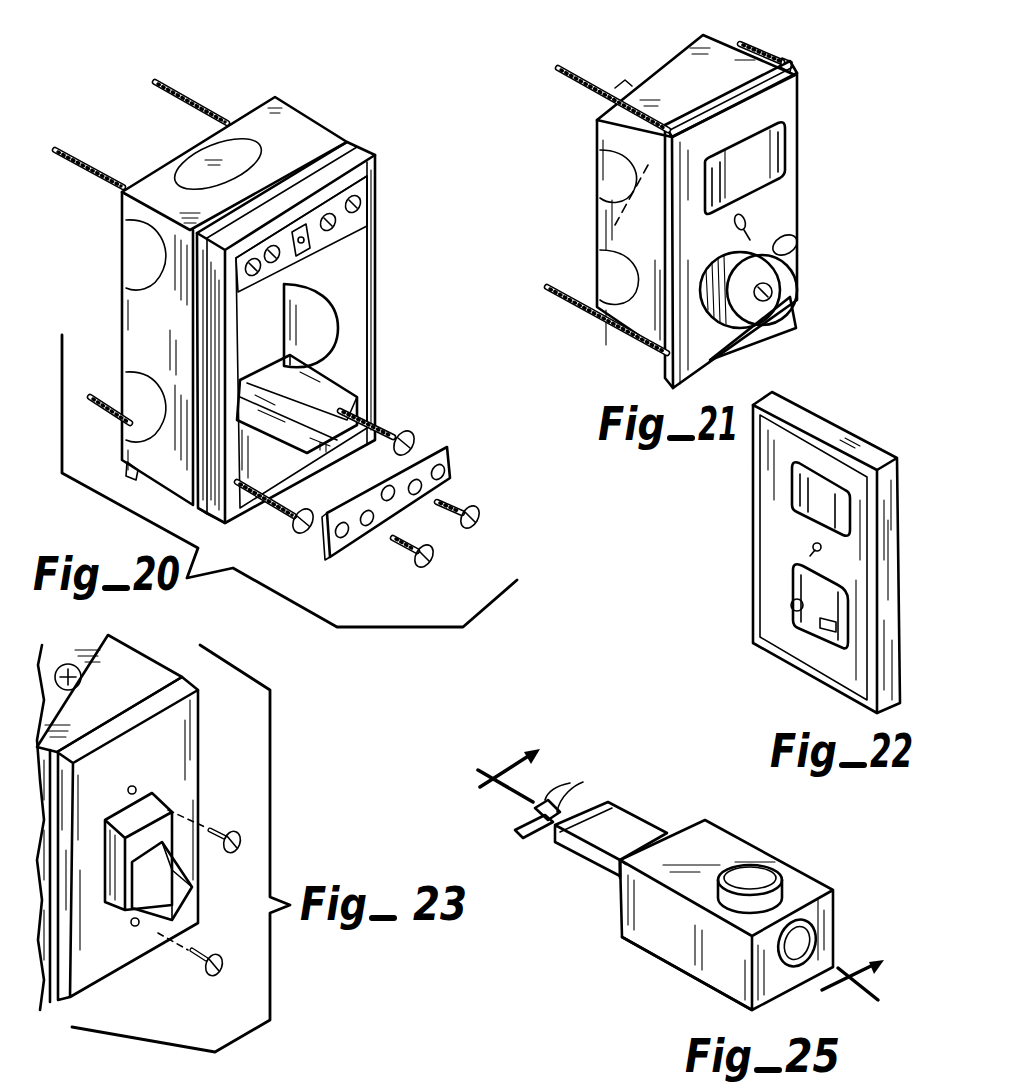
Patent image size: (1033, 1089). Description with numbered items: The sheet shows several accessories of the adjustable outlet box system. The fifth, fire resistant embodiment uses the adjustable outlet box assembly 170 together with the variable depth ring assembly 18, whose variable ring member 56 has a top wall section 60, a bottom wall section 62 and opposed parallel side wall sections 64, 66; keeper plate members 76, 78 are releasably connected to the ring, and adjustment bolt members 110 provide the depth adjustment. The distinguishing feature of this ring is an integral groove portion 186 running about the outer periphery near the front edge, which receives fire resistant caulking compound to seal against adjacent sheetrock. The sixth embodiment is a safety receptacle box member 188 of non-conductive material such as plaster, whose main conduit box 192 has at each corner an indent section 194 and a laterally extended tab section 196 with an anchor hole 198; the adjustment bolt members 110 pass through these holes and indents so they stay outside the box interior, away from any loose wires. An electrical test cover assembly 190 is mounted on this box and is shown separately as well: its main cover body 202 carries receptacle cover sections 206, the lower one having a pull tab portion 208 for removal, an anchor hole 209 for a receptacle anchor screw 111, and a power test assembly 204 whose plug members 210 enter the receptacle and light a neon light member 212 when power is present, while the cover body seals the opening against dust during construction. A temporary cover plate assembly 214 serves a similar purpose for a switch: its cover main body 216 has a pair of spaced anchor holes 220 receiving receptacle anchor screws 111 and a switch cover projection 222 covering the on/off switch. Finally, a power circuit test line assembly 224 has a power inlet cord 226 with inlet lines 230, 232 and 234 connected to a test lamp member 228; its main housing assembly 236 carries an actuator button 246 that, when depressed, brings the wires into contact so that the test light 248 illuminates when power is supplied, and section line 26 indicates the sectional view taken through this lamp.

In FIG. 20, the variable depth ring assembly 18 is at (380, 223).
In FIG. 20, the variable ring member 56 is at (122, 300).
In FIG. 23, the variable ring member 56 is at (72, 676).
In FIG. 20, the top wall section 60 is at (150, 183).
In FIG. 20, the bottom wall section 62 is at (130, 468).
In FIG. 20, the side wall section 64 is at (127, 395).
In FIG. 20, the side wall section 66 is at (377, 302).
In FIG. 20, the keeper plate member 76 is at (450, 458).
In FIG. 20, the keeper plate member 78 is at (366, 262).
In FIG. 20, the adjustment bolt member 110 is at (80, 158).
In FIG. 21, the adjustment bolt member 110 is at (558, 72).
In FIG. 23, the receptacle anchor screw 111 is at (240, 838).
In FIG. 20, the adjustable outlet box assembly 170 is at (347, 84).
In FIG. 20, the groove portion 186 is at (324, 167).
In FIG. 21, the safety receptacle box member 188 is at (653, 70).
In FIG. 21, the electrical test cover assembly 190 is at (797, 142).
In FIG. 22, the electrical test cover assembly 190 is at (877, 395).
In FIG. 21, the main conduit box 192 is at (603, 207).
In FIG. 21, the indent section 194 is at (718, 42).
In FIG. 21, the tab section 196 is at (800, 115).
In FIG. 21, the anchor hole 198 is at (696, 62).
In FIG. 21, the main cover body 202 is at (778, 222).
In FIG. 22, the main cover body 202 is at (773, 482).
In FIG. 22, the power test assembly 204 is at (806, 586).
In FIG. 21, the receptacle cover section 206 is at (757, 172).
In FIG. 21, the pull tab portion 208 is at (800, 263).
In FIG. 21, the anchor hole 209 is at (782, 298).
In FIG. 22, the anchor hole 209 is at (811, 551).
In FIG. 22, the plug member 210 is at (807, 627).
In FIG. 21, the neon light member 212 is at (712, 360).
In FIG. 23, the temporary cover plate assembly 214 is at (255, 763).
In FIG. 23, the cover main body 216 is at (110, 788).
In FIG. 23, the anchor hole 220 is at (134, 788).
In FIG. 23, the switch cover projection 222 is at (186, 893).
In FIG. 25, the power circuit test line assembly 224 is at (760, 845).
In FIG. 25, the power inlet cord 226 is at (630, 823).
In FIG. 25, the test lamp member 228 is at (740, 915).
In FIG. 25, the inlet line 230 is at (535, 832).
In FIG. 25, the inlet line 232 is at (585, 797).
In FIG. 25, the inlet line 234 is at (575, 792).
In FIG. 25, the main housing assembly 236 is at (622, 902).
In FIG. 25, the actuator button 246 is at (640, 945).
In FIG. 25, the test light 248 is at (797, 965).
In FIG. 25, the section line 26- 26 is at (693, 858).